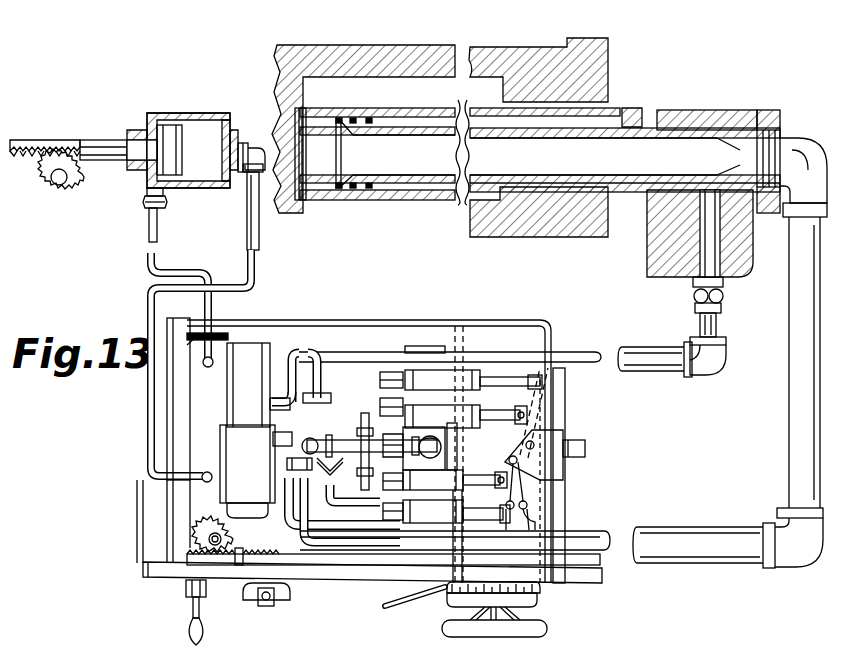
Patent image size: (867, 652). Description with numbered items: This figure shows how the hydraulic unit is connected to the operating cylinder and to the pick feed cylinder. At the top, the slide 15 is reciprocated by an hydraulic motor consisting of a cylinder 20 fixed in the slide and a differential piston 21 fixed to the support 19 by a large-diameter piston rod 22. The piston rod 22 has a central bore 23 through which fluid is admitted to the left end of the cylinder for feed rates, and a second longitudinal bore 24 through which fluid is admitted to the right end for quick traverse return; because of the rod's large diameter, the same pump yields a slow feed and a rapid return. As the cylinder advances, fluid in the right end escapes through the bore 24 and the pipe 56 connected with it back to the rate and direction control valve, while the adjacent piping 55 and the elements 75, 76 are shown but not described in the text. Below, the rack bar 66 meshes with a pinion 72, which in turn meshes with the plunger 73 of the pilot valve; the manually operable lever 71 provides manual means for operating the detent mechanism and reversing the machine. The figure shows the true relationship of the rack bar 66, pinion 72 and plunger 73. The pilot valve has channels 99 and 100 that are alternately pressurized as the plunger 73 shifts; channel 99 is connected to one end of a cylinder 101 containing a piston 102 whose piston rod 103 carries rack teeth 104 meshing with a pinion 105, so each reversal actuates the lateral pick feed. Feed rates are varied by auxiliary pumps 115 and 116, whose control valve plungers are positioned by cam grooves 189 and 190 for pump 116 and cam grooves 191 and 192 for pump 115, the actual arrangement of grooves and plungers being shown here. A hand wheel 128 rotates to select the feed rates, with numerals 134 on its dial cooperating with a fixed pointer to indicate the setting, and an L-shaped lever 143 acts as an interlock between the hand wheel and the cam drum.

The slide 15 is at (388, 62).
The differential piston 21 is at (385, 120).
The cylinder 20 is at (335, 198).
The second longitudinal bore 24 is at (450, 186).
The piston rod 22 is at (651, 127).
The support 19 is at (694, 118).
The central bore 23 is at (717, 155).
The pipe 55 is at (800, 298).
The pipe 56 is at (665, 362).
The rack teeth 104 is at (30, 140).
The piston rod 103 is at (95, 148).
The piston 102 is at (168, 130).
The cylinder 101 is at (205, 120).
The pinion 105 is at (60, 190).
The channel 99 is at (211, 312).
The channel 100 is at (147, 435).
The auxiliary pump 115 is at (430, 345).
The auxiliary pump 116 is at (412, 505).
The cam groove 191 is at (493, 470).
The cam groove 192 is at (500, 490).
The cam groove 189 is at (535, 512).
The cam groove 190 is at (548, 526).
The pinion 72 is at (237, 538).
The plunger 73 is at (180, 580).
The rack bar 66 is at (233, 565).
The manually operable lever 71 is at (270, 605).
The L-shaped lever 143 is at (410, 605).
The numerals 134 is at (540, 600).
The hand wheel 128 is at (455, 630).
The element 75 is at (37, 651).
The element 76 is at (80, 651).